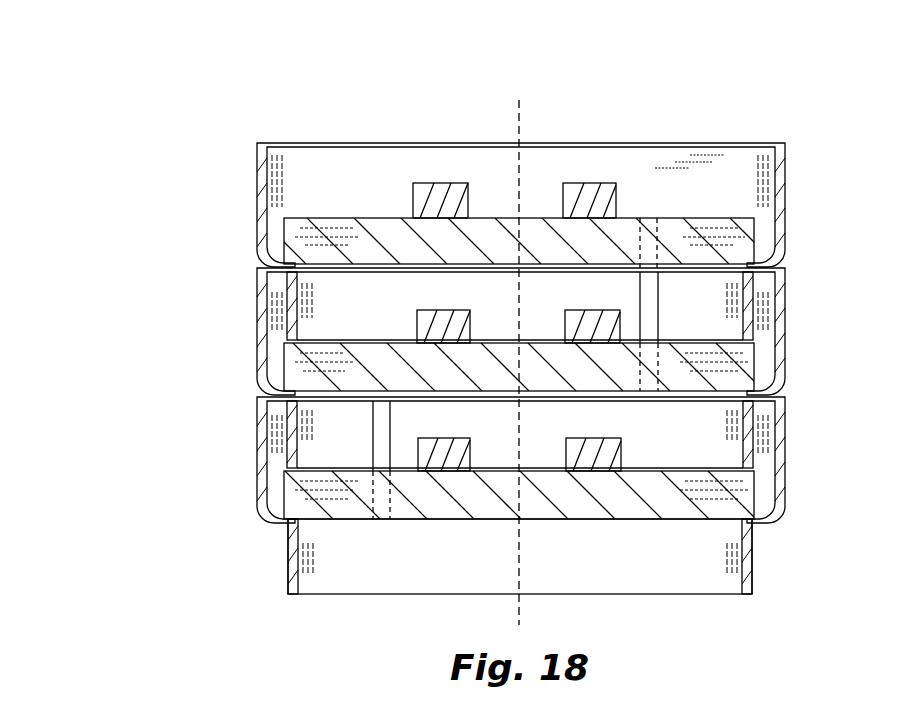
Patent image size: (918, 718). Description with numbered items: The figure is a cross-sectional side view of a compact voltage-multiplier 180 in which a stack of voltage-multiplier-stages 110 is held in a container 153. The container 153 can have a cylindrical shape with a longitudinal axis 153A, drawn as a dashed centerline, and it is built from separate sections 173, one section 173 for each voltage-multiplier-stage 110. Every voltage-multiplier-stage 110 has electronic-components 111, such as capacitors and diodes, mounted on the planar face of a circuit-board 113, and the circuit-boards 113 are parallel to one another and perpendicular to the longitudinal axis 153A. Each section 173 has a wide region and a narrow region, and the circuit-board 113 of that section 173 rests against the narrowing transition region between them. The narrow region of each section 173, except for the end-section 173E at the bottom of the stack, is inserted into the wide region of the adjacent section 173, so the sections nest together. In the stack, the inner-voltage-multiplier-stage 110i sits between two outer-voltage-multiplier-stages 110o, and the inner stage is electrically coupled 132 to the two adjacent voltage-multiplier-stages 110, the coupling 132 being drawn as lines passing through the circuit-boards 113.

The compact voltage-multiplier 180 is at (165, 170).
The container 153 is at (280, 100).
The longitudinal axis 153A is at (517, 122).
The voltage-multiplier-stage 110 is at (781, 228).
The outer-voltage-multiplier-stage 110o is at (250, 240).
The inner-voltage-multiplier-stage 110i is at (250, 366).
The electronic-components 111 is at (430, 203).
The circuit-board 113 is at (472, 257).
The section 173 is at (508, 302).
The end-section 173E is at (678, 582).
The electrical coupling 132 is at (642, 293).